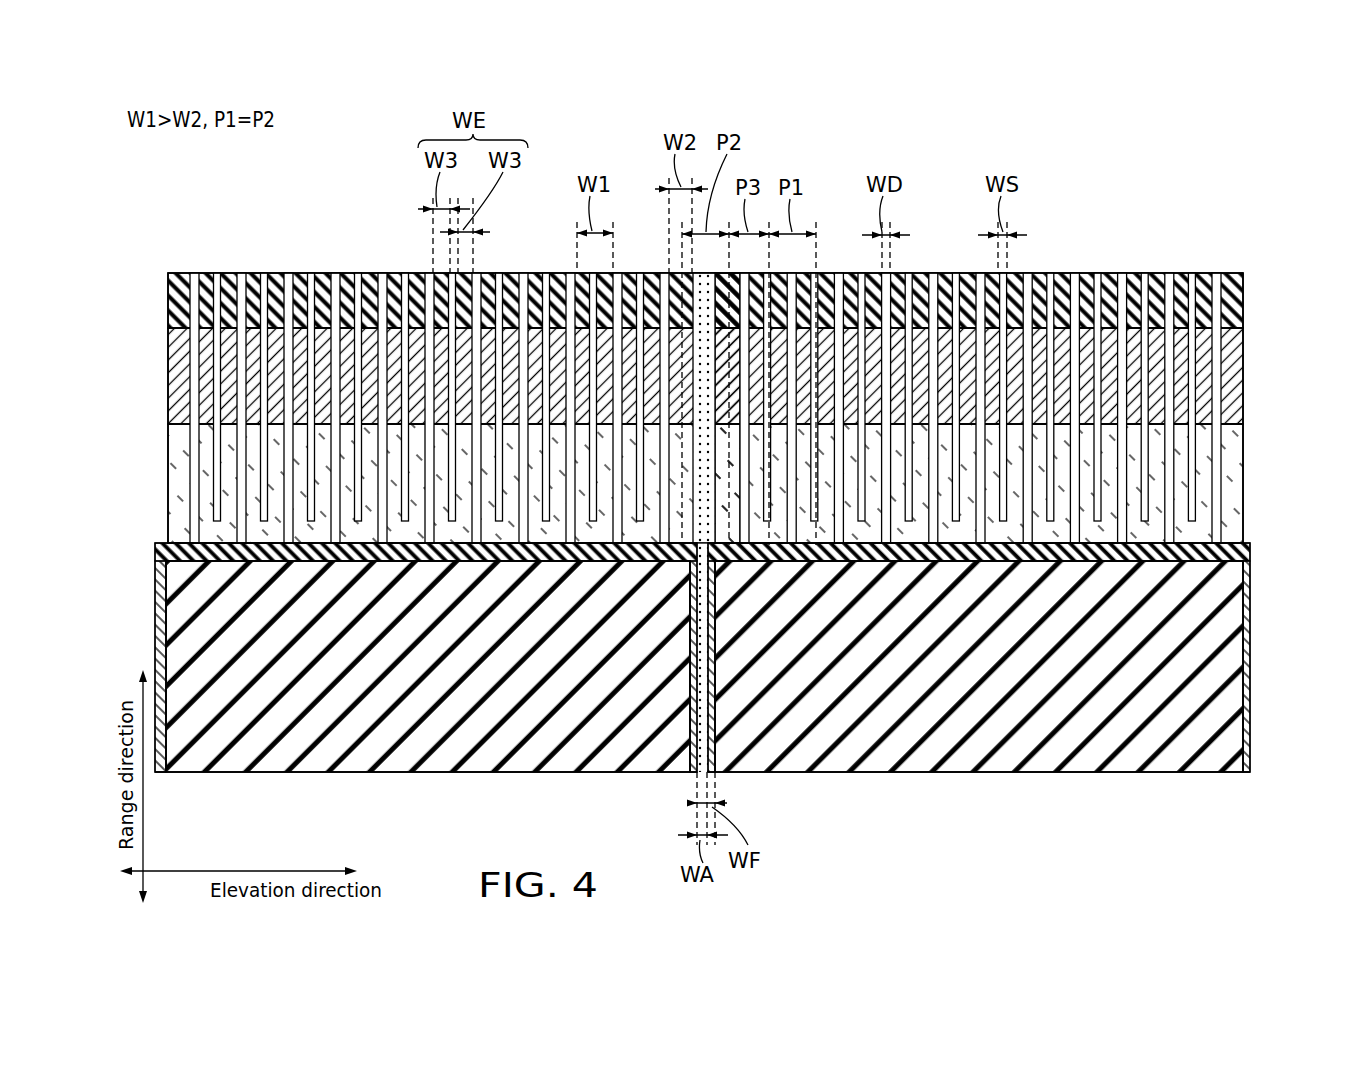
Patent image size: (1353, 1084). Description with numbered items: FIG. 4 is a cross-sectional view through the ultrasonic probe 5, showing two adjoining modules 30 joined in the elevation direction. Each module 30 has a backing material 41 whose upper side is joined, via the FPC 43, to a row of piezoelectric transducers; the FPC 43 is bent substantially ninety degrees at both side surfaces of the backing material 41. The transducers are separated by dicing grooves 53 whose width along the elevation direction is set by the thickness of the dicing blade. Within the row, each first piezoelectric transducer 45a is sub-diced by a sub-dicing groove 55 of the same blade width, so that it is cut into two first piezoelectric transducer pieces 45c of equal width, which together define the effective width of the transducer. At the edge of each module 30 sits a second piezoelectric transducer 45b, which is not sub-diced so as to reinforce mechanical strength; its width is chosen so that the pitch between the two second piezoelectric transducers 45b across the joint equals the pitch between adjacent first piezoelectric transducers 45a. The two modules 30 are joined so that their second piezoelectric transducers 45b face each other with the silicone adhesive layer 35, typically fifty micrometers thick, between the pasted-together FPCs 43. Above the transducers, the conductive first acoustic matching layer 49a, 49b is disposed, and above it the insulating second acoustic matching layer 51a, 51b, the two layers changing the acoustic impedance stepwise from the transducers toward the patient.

The ultrasonic probe 5 is at (1148, 192).
The module 30 is at (387, 777).
The adhesive layer 35 is at (700, 508).
The backing material 41 is at (275, 757).
The FPC 43 is at (318, 565).
The first piezoelectric transducer 45a is at (1200, 480).
The second piezoelectric transducer 45b is at (733, 535).
The first piezoelectric transducer piece 45c is at (453, 512).
The second dielectric layer 49a is at (1195, 378).
The second dielectric layer of center element 49b is at (737, 377).
The conductor layer 51a is at (1205, 296).
The conductor layer of center element 51b is at (740, 303).
The dicing groove 53 is at (975, 510).
The sub-dicing groove 55 is at (1003, 517).